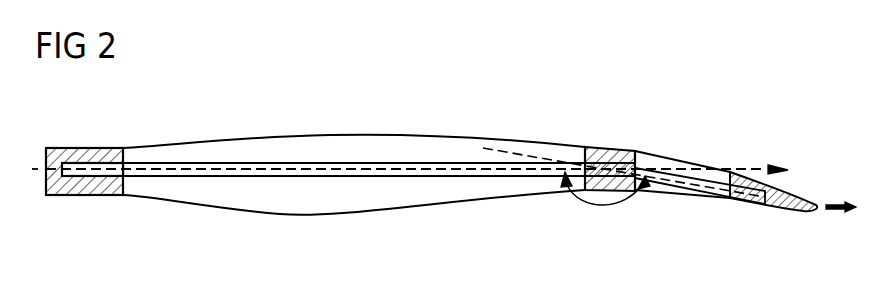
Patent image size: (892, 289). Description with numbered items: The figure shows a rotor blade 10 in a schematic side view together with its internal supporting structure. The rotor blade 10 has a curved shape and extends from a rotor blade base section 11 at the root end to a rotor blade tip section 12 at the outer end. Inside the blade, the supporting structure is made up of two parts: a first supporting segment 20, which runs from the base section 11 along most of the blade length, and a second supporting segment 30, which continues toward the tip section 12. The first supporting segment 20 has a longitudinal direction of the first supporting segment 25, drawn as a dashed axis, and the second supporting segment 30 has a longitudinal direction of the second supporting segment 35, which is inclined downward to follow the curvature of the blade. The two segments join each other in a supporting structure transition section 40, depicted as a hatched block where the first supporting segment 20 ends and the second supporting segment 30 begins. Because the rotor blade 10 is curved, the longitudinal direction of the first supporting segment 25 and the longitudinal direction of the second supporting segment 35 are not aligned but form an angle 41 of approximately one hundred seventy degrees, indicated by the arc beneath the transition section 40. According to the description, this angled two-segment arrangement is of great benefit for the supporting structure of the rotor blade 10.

The rotor blade 10 is at (446, 103).
The rotor blade base section 11 is at (100, 153).
The rotor blade tip section 12 is at (779, 208).
The first supporting segment 20 is at (279, 162).
The longitudinal direction of the first supporting segment 25 is at (752, 168).
The second supporting segment 30 is at (674, 172).
The longitudinal direction of the second supporting segment 35 is at (828, 202).
The supporting structure transition section 40 is at (598, 147).
The angle 41 is at (603, 210).